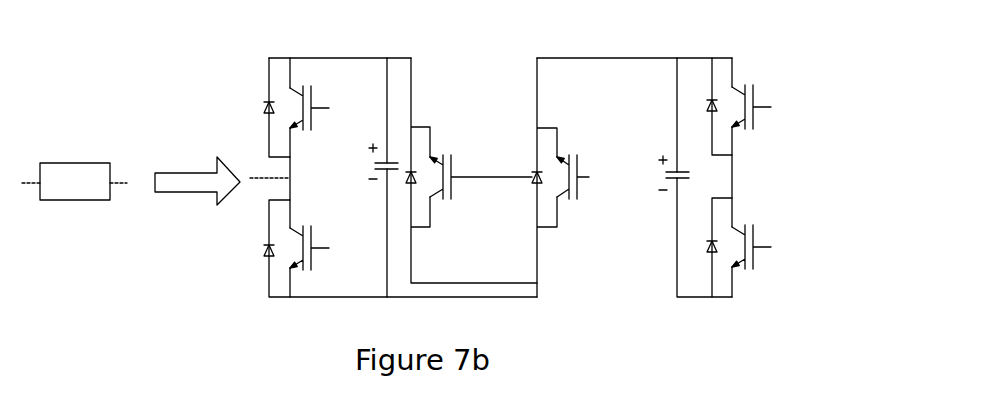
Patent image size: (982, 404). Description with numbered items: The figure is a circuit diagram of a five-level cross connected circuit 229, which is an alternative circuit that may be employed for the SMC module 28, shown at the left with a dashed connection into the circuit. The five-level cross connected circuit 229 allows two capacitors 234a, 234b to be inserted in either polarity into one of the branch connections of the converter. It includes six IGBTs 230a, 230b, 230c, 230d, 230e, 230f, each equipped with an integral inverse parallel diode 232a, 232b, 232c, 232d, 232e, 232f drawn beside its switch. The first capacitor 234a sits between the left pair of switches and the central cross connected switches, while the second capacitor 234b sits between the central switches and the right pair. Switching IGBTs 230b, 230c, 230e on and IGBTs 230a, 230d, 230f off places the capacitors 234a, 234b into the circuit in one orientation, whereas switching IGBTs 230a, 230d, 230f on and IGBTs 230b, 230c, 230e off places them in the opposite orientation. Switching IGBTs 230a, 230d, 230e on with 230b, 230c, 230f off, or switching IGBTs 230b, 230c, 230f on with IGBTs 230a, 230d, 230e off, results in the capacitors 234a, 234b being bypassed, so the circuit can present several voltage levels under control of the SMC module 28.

The SMC module 28 is at (76, 160).
The five-level cross connected circuit 229 is at (264, 55).
The IGBT 230a is at (291, 126).
The IGBT 230b is at (291, 284).
The IGBT 230c is at (735, 124).
The IGBT 230d is at (736, 263).
The IGBT 230e is at (433, 159).
The IGBT 230f is at (571, 199).
The integral inverse parallel diode 232a is at (263, 108).
The integral inverse parallel diode 232b is at (263, 250).
The integral inverse parallel diode 232c is at (713, 98).
The integral inverse parallel diode 232d is at (713, 253).
The integral inverse parallel diode 232e is at (411, 171).
The integral inverse parallel diode 232f is at (527, 178).
The capacitor 234a is at (393, 172).
The capacitor 234b is at (680, 178).